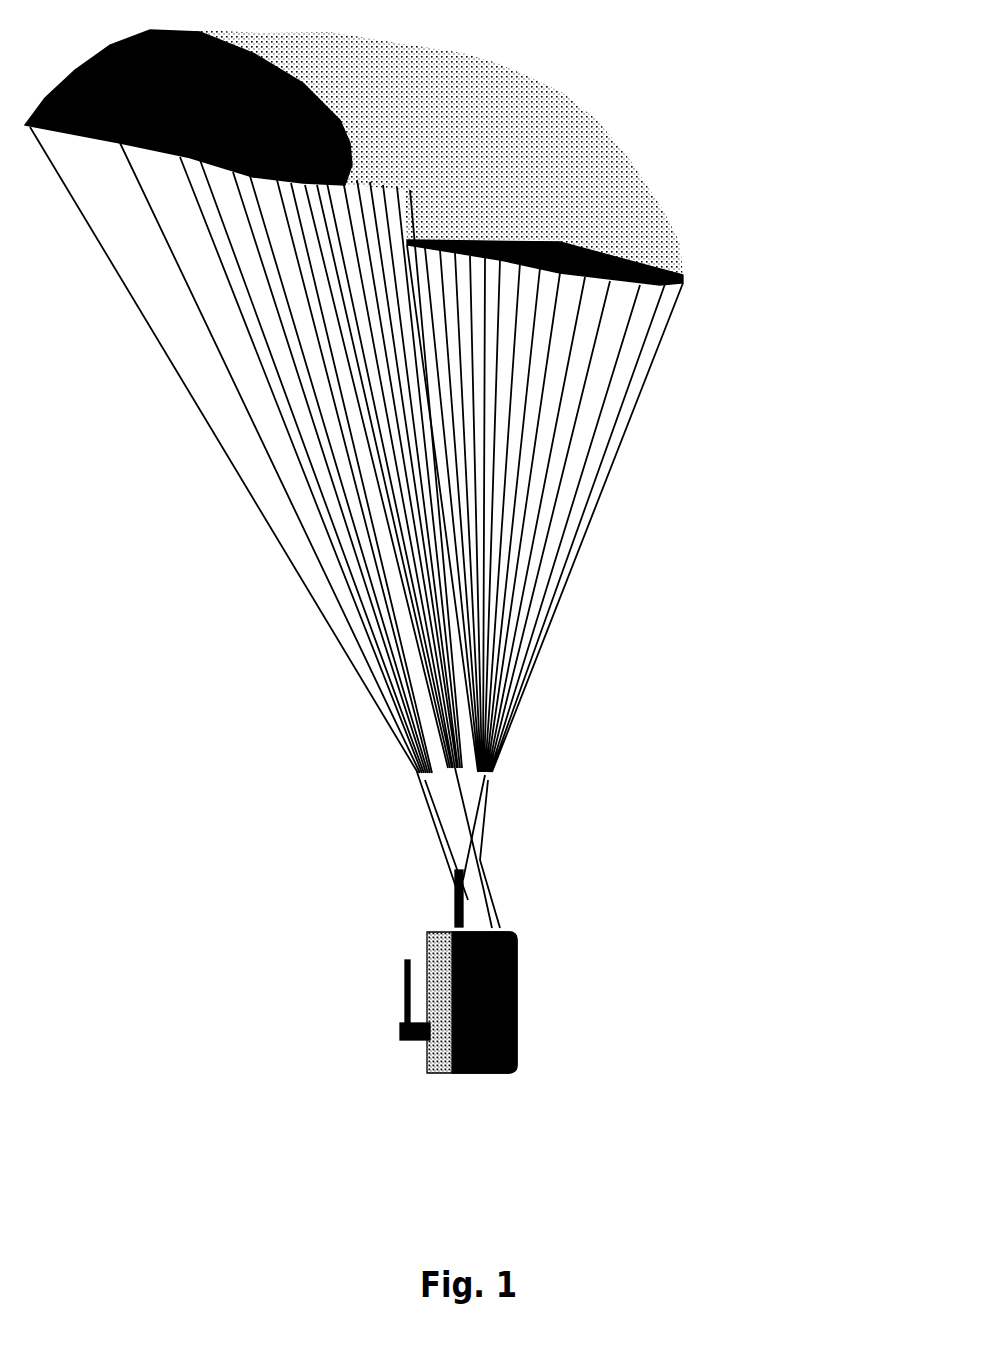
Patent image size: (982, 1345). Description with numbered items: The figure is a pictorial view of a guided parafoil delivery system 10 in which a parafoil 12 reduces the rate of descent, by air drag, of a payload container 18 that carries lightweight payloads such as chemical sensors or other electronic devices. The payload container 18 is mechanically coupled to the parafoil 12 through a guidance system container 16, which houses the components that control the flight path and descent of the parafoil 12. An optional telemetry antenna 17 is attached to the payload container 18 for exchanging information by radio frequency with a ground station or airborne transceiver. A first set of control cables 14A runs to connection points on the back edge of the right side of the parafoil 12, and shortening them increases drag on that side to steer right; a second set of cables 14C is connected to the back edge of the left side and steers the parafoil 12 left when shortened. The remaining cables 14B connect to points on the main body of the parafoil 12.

The guided parafoil delivery system 10 is at (778, 137).
The parafoil 12 is at (592, 135).
The first set of control cables 14A is at (487, 800).
The remaining cables 14B is at (465, 800).
The second set of cables 14C is at (417, 772).
The guidance system container 16 is at (452, 905).
The telemetry antenna 17 is at (402, 1000).
The payload container 18 is at (517, 988).